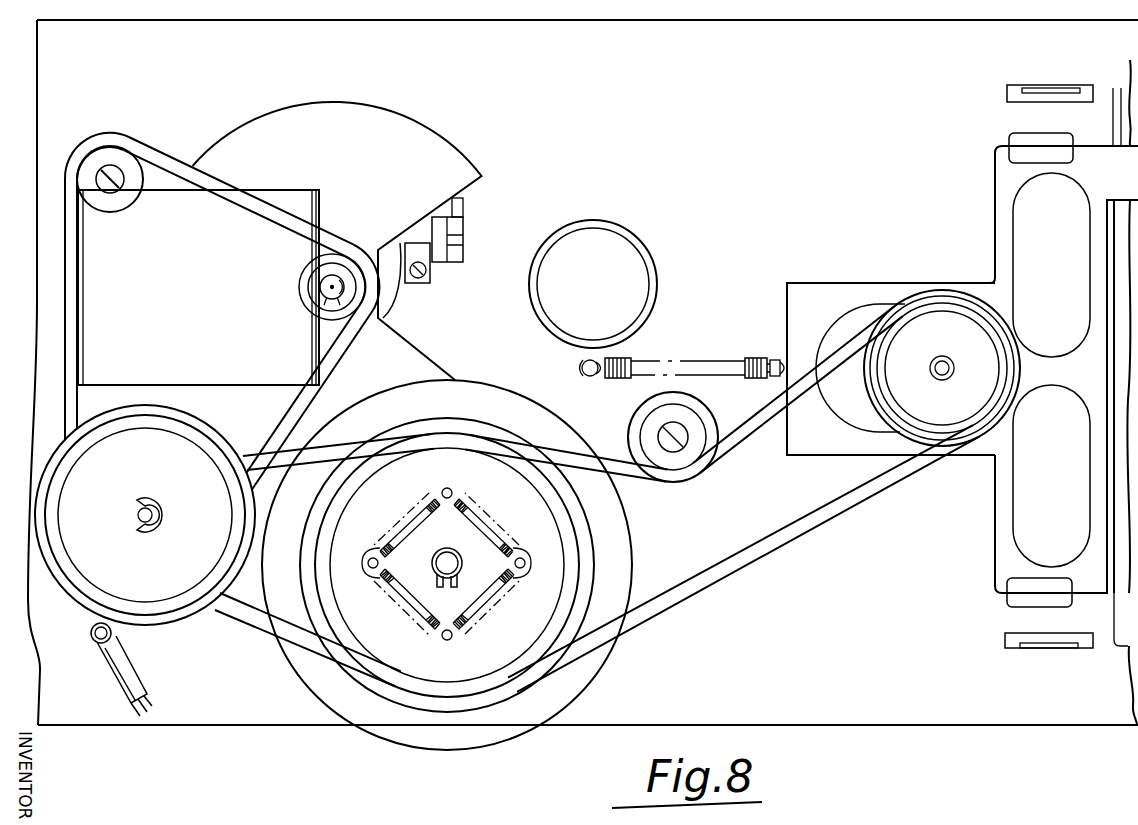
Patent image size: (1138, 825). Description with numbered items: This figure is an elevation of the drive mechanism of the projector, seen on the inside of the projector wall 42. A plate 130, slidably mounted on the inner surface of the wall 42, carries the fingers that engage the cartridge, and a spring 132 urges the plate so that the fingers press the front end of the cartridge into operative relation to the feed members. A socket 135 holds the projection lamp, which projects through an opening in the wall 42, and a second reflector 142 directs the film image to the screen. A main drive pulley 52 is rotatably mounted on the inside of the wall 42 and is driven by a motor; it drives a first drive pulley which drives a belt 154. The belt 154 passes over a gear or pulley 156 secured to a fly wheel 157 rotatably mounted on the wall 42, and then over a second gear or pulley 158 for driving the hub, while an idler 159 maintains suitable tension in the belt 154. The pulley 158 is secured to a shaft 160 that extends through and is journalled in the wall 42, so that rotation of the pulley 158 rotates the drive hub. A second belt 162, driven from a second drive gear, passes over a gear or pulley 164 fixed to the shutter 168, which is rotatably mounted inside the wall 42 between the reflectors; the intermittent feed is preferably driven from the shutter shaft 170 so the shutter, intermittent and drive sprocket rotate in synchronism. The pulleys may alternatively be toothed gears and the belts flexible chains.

The projector wall 42 is at (905, 712).
The drive pulley 52 is at (42, 540).
The plate 130 is at (990, 215).
The spring 132 is at (714, 355).
The socket 135 is at (648, 268).
The second reflector 142 is at (211, 312).
The belt 154 is at (252, 624).
The gear or pulley 156 is at (590, 582).
The fly wheel 157 is at (597, 668).
The second gear or pulley 158 is at (868, 418).
The idler 159 is at (636, 414).
The shaft 160 is at (946, 374).
The second belt 162 is at (336, 360).
The gear or pulley 164 is at (342, 262).
The shutter 168 is at (452, 168).
The shutter shaft 170 is at (320, 288).